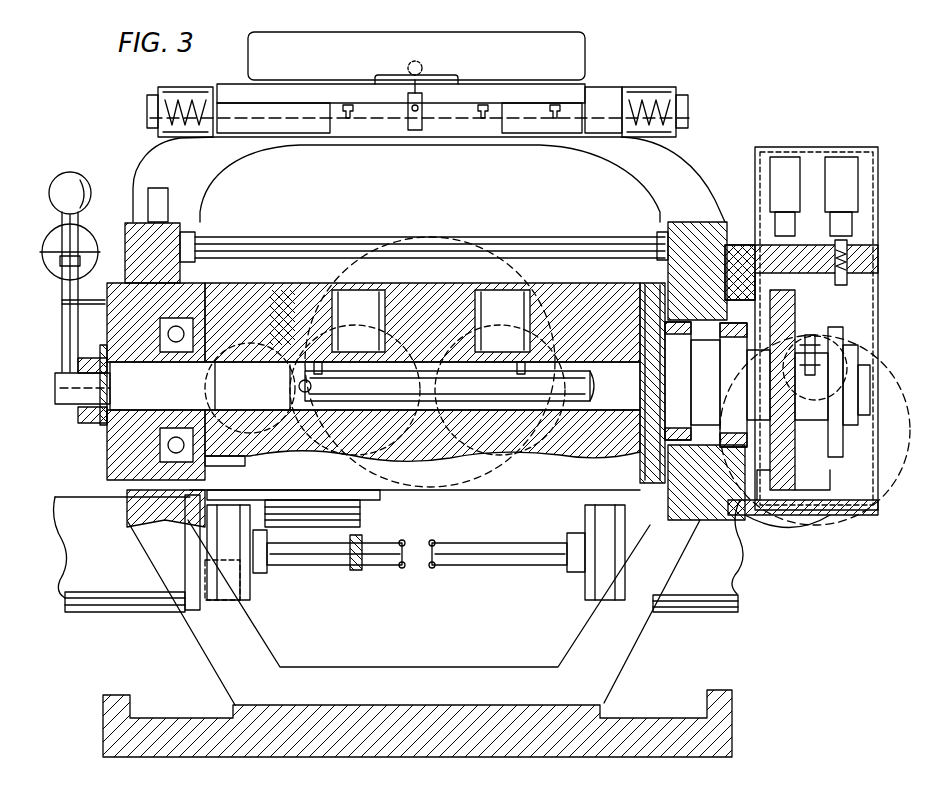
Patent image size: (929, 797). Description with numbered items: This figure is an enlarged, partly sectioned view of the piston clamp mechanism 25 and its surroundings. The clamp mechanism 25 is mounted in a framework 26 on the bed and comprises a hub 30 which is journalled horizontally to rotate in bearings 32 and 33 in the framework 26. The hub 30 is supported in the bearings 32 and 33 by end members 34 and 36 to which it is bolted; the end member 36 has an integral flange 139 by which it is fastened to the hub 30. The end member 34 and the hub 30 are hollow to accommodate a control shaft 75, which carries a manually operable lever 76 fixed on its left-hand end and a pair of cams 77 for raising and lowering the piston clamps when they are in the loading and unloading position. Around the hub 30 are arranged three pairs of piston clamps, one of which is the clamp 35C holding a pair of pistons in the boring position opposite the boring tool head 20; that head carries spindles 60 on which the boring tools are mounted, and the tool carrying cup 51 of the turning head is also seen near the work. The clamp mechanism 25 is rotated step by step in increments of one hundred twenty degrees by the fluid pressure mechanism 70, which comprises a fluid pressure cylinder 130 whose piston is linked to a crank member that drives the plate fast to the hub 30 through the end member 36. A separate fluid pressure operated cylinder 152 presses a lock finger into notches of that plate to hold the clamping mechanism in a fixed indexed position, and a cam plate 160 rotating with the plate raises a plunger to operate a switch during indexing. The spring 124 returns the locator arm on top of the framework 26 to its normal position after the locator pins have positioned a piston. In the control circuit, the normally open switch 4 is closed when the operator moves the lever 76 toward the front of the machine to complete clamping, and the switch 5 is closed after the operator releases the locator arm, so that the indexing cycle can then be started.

The switch 4 is at (50, 248).
The switch 5 is at (423, 66).
The boring tool head 20 is at (718, 582).
The piston clamp mechanism 25 is at (405, 280).
The framework 26 is at (590, 242).
The hub 30 is at (232, 292).
The bearing 32 is at (176, 343).
The bearing 33 is at (678, 381).
The end member 34 is at (245, 455).
The piston clamp 35C is at (382, 502).
The end member 36 is at (708, 418).
The tool carrying cup 51 is at (430, 362).
The spindle 60 is at (348, 571).
The fluid pressure mechanism 70 is at (878, 376).
The control shaft 75 is at (68, 386).
The manually operable lever 76 is at (80, 177).
The cam 77 is at (322, 376).
The spring 124 is at (150, 112).
The fluid pressure cylinder 130 is at (880, 302).
The integral flange 139 is at (648, 292).
The fluid pressure operated cylinder 152 is at (808, 520).
The cam plate 160 is at (845, 442).